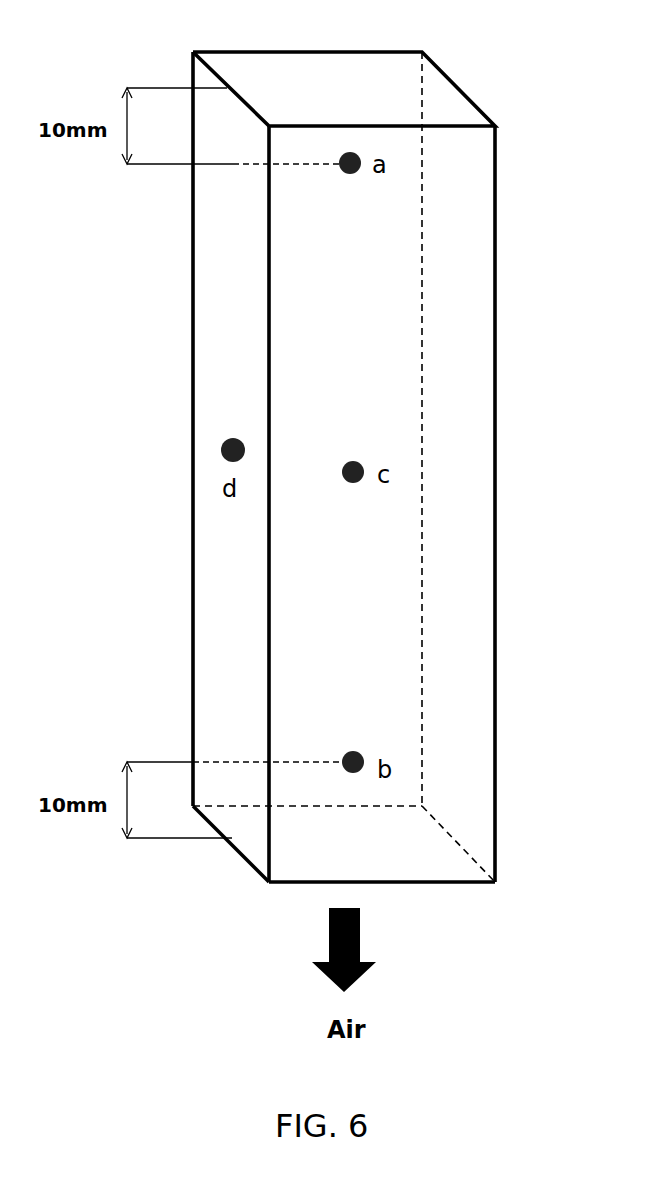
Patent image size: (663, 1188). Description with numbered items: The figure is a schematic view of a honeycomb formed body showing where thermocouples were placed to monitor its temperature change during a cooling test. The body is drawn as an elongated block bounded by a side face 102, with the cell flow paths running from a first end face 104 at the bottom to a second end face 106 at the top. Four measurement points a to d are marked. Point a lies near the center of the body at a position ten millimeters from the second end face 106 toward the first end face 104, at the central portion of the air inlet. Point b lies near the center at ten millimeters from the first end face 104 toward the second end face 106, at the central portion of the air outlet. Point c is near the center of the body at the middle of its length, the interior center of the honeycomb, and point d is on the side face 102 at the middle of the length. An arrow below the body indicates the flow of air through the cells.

The side face 102 is at (203, 600).
The first end face 104 is at (245, 863).
The second end face 106 is at (237, 67).